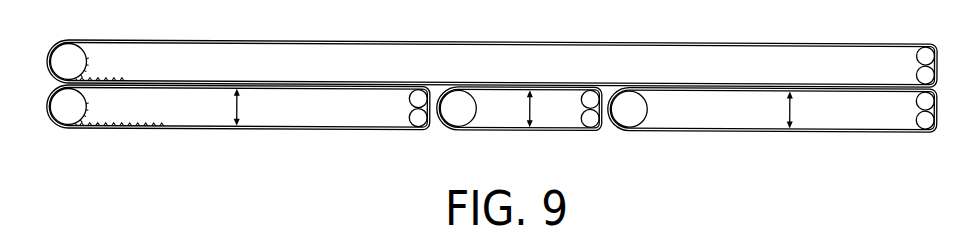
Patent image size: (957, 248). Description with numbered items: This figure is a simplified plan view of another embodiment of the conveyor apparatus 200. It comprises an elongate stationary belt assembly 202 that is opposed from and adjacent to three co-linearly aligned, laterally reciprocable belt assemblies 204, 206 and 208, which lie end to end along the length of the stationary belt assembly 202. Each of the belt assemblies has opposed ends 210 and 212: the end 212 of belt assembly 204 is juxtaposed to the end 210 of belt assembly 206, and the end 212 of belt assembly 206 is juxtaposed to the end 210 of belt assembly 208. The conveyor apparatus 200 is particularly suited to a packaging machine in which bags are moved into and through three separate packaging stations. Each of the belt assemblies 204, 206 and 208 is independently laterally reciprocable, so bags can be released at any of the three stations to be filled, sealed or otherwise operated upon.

The conveyor apparatus 200 is at (584, 26).
The elongate stationary belt assembly 202 is at (427, 40).
The laterally reciprocable belt assembly 204 is at (203, 130).
The laterally reciprocable belt assembly 206 is at (538, 127).
The laterally reciprocable belt assembly 208 is at (779, 128).
The end 210 is at (48, 58).
The end 212 is at (938, 50).